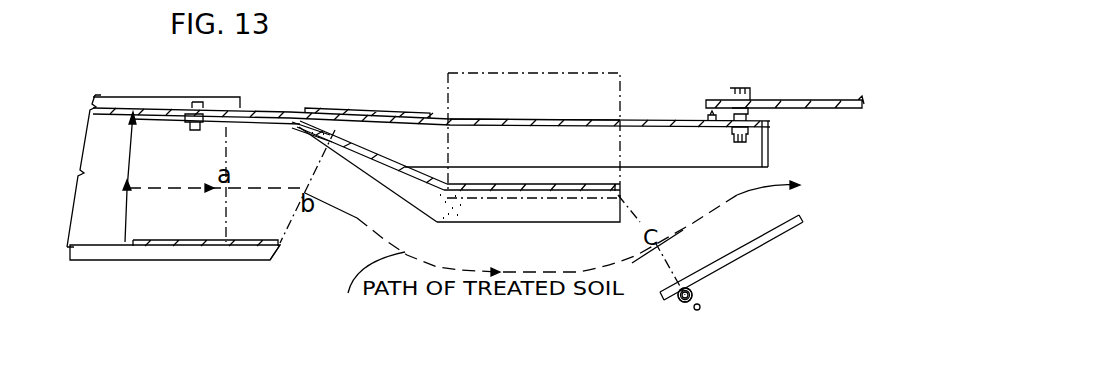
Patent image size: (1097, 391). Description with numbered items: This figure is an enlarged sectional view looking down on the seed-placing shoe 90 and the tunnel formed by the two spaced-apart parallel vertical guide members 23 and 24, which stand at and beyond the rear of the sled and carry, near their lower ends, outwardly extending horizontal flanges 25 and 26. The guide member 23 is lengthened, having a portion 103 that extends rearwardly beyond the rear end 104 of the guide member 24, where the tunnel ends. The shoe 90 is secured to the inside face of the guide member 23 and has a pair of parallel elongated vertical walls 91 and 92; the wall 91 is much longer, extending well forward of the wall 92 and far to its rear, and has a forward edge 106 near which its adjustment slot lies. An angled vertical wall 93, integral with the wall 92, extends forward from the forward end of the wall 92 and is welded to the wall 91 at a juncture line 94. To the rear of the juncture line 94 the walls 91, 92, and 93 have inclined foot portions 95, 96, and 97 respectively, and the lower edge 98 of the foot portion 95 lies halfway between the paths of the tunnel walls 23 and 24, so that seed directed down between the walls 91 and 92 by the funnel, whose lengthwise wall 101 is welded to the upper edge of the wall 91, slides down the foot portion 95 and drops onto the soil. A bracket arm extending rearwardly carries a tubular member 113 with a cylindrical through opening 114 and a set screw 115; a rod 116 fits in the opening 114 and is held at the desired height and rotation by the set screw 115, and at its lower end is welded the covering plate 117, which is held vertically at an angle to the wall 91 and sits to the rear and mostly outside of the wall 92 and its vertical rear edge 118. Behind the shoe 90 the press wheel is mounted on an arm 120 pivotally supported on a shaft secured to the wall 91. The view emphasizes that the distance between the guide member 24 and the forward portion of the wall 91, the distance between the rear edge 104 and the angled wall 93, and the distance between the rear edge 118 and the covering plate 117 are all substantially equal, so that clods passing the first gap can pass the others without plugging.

The guide member 23 is at (273, 112).
The guide member 24 is at (188, 241).
The horizontal flange 25 is at (190, 73).
The horizontal flange 26 is at (200, 255).
The shoe 90 is at (633, 132).
The vertical wall 91 is at (563, 121).
The vertical wall 92 is at (555, 183).
The vertical wall 93 is at (383, 152).
The juncture line 94 is at (310, 121).
The foot portion 95 is at (532, 158).
The foot portion 96 is at (512, 210).
The foot portion 97 is at (390, 173).
The lower edge 98 is at (612, 182).
The lengthwise wall 101 is at (548, 53).
The rearwardly extending portion 103 is at (393, 112).
The rear end 104 is at (283, 245).
The forward edge 106 is at (185, 120).
The tubular member 113 is at (686, 302).
The cylindrical through opening 114 is at (700, 292).
The set screw 115 is at (700, 309).
The rod 116 is at (680, 300).
The covering plate 117 is at (764, 243).
The rear edge 118 is at (622, 187).
The arm 120 is at (778, 100).